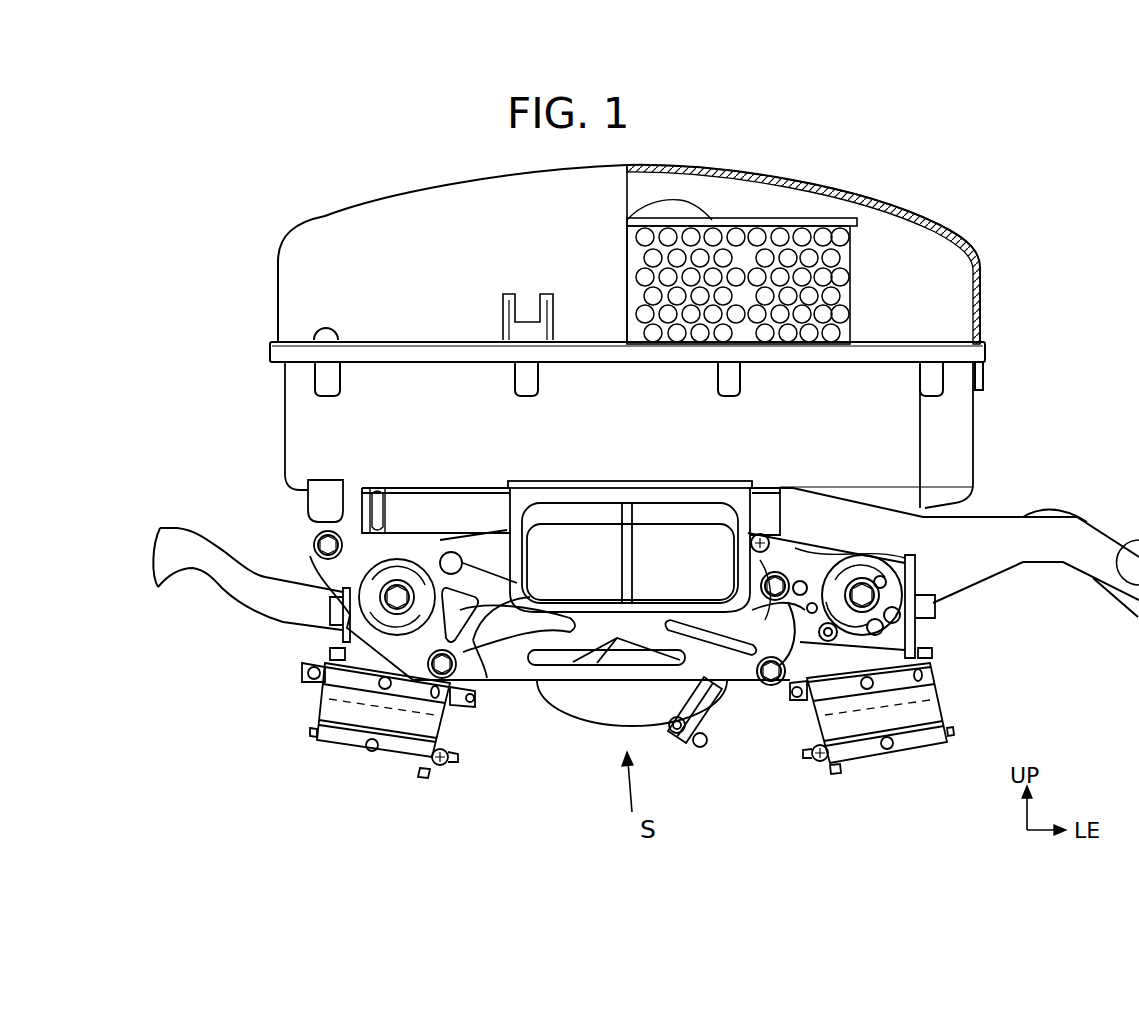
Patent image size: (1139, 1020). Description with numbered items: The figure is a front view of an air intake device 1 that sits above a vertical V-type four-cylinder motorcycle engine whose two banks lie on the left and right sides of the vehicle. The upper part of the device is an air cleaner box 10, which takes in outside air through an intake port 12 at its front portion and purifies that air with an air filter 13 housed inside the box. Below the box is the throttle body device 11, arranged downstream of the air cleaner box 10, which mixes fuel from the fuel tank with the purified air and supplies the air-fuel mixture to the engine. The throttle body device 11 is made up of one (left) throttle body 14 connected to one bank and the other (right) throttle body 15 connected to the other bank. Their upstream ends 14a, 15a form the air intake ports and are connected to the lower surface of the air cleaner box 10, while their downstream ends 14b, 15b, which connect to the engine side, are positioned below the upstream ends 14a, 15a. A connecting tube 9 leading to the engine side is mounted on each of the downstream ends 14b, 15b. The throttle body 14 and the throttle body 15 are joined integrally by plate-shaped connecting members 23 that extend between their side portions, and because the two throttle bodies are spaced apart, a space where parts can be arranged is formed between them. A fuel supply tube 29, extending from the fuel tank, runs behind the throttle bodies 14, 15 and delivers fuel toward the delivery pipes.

The air intake device 1 is at (1021, 268).
The connecting tube 9 is at (320, 700).
The air cleaner box 10 is at (339, 210).
The throttle body device 11 is at (322, 647).
The intake port 12 is at (541, 514).
The air filter 13 is at (762, 221).
The throttle body 14 is at (924, 631).
The upstream end 14a is at (903, 553).
The downstream end 14b is at (880, 700).
The throttle body 15 is at (322, 643).
The upstream end 15a is at (430, 532).
The downstream end 15b is at (365, 695).
The connecting member 23 is at (556, 676).
The fuel supply tube 29 is at (597, 720).